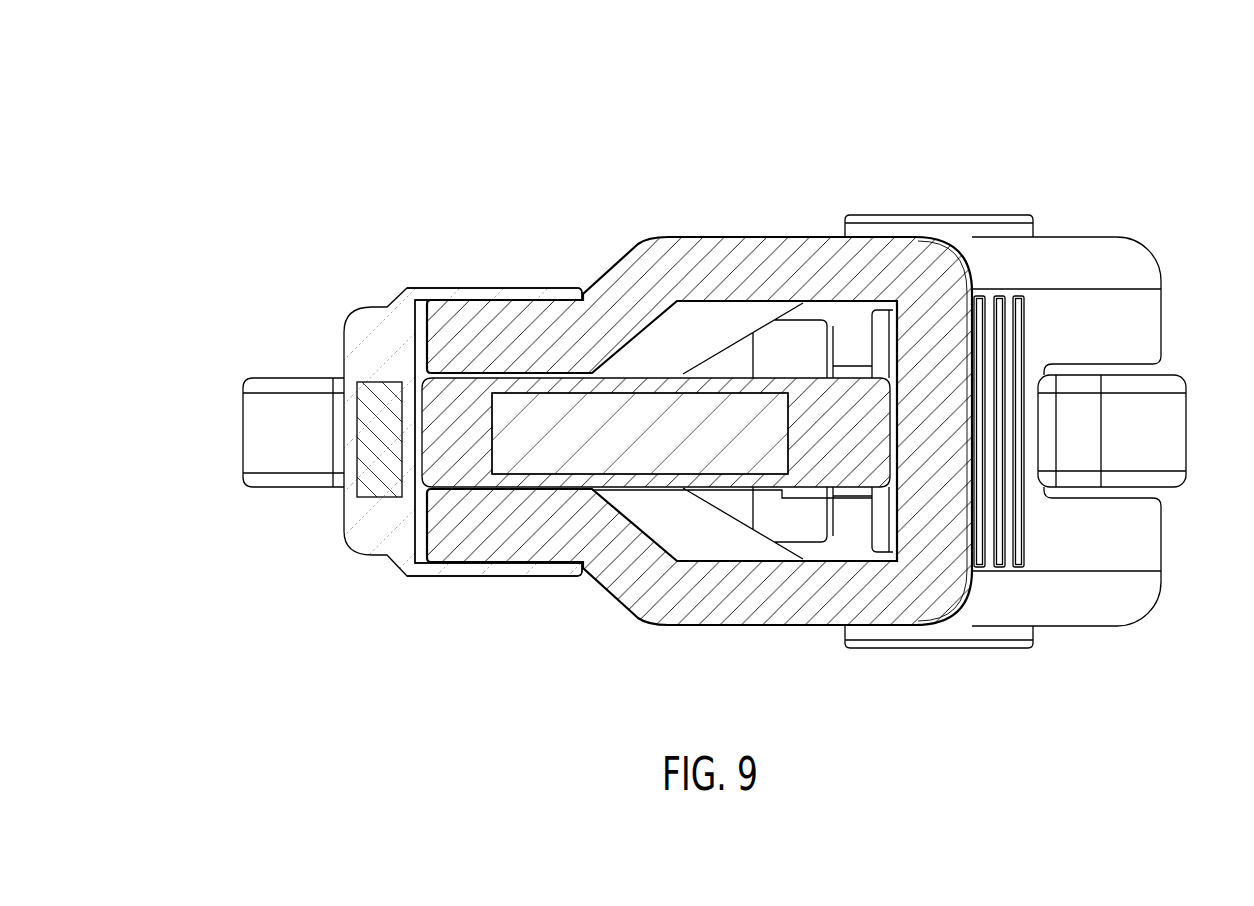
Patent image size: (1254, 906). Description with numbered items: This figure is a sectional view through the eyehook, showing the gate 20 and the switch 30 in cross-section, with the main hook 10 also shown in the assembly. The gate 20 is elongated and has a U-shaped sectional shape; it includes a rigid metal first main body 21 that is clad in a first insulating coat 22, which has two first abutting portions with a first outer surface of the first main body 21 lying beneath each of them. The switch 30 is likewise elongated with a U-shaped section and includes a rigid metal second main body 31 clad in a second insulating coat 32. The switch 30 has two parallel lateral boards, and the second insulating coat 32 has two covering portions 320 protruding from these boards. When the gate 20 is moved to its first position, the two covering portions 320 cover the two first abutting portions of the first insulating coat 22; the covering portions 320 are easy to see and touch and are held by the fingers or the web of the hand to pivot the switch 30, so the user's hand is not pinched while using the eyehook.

The main hook 10 is at (435, 462).
The gate 20 is at (806, 336).
The first main body 21 is at (893, 270).
The first insulating coat 22 is at (792, 238).
The switch 30 is at (356, 335).
The second main body 31 is at (365, 420).
The second insulating coat 32 is at (420, 335).
The covering portions 320 is at (467, 293).